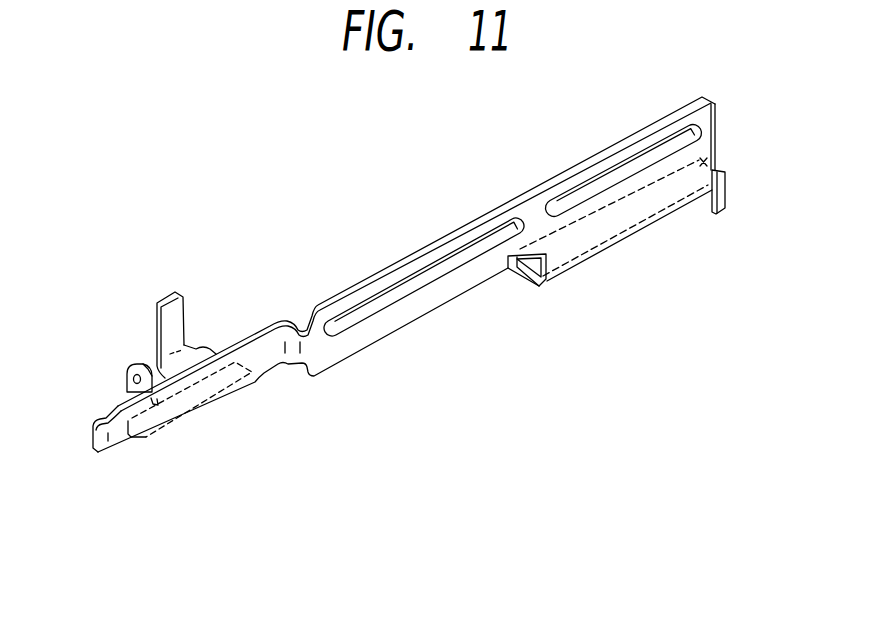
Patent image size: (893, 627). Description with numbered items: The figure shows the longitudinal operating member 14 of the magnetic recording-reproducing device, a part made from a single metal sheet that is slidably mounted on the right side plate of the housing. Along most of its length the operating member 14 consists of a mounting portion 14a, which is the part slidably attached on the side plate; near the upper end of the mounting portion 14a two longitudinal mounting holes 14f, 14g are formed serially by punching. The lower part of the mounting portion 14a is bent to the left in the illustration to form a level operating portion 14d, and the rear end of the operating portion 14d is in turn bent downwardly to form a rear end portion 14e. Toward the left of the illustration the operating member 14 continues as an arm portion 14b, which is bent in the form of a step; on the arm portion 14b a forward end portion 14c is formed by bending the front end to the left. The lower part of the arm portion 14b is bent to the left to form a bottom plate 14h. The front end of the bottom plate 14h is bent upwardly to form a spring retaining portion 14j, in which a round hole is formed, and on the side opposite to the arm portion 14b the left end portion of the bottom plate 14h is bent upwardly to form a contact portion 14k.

The operating member 14 is at (458, 213).
The mounting portion 14a is at (477, 280).
The arm portion 14b is at (207, 388).
The forward end portion 14c is at (100, 452).
The operating portion 14d is at (707, 159).
The rear end portion 14e is at (727, 189).
The mounting hole 14f is at (414, 280).
The mounting hole 14g is at (627, 167).
The bottom plate 14h is at (202, 346).
The spring retaining portion 14j is at (127, 379).
The contact portion 14k is at (173, 312).